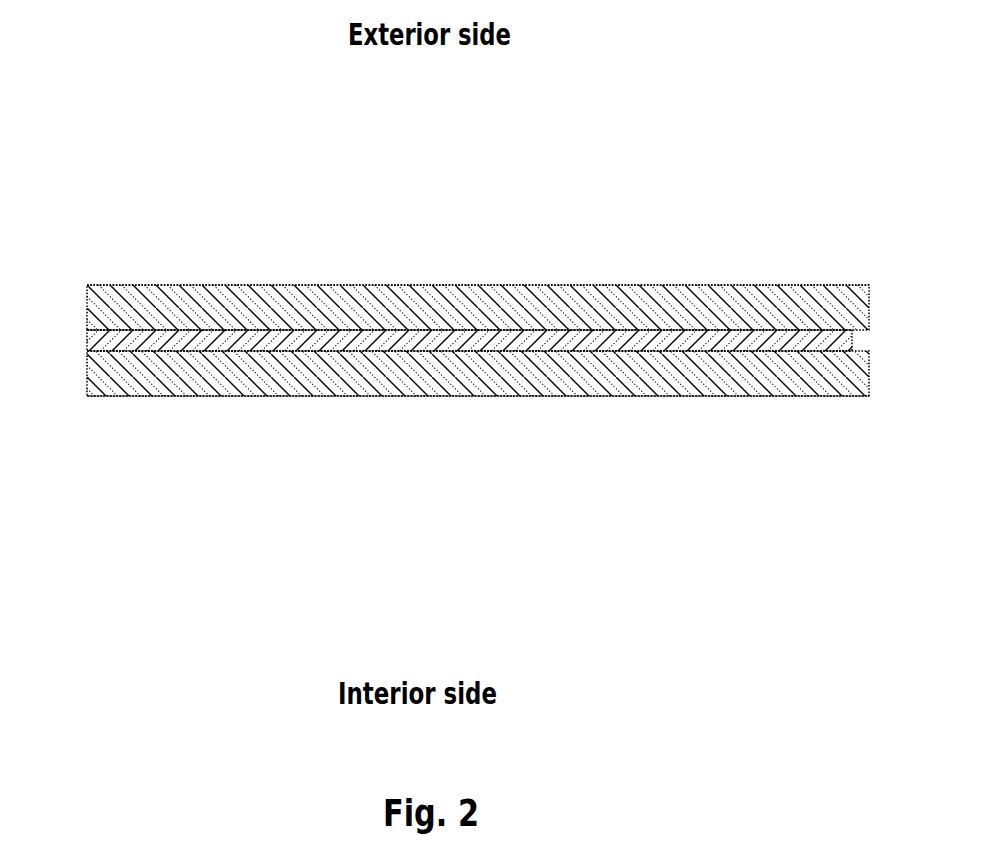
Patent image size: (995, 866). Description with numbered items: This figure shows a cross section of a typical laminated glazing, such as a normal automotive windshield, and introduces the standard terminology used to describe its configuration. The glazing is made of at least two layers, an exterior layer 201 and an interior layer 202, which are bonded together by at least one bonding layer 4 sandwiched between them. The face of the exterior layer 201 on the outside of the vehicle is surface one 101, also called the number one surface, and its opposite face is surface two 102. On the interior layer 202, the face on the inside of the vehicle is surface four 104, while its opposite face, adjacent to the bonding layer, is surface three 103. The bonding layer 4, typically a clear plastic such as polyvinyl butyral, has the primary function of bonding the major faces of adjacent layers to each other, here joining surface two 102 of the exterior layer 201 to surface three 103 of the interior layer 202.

The exterior layer 201 is at (72, 313).
The interior layer 202 is at (72, 378).
The bonding layer 4 is at (176, 336).
The surface one 101 is at (255, 279).
The surface two 102 is at (428, 318).
The surface three 103 is at (247, 363).
The surface four 104 is at (323, 408).